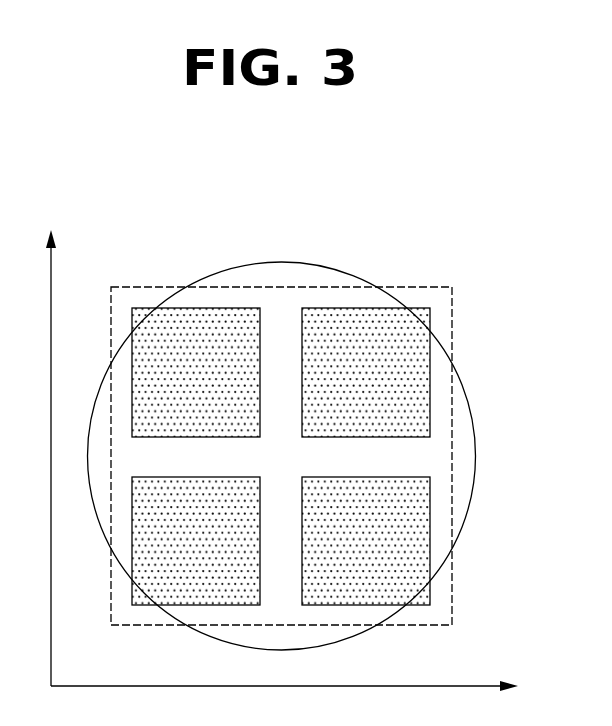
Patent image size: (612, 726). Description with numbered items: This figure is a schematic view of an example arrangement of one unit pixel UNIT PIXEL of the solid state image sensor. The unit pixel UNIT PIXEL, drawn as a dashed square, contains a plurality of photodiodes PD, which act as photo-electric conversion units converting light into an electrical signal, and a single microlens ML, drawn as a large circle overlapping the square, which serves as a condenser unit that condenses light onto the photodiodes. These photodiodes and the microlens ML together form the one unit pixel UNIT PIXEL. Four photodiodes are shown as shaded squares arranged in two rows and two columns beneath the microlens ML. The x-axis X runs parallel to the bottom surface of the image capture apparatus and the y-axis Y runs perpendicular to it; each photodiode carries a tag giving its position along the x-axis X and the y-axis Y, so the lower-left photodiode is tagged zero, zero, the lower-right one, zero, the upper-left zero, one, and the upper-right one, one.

The microlens ML is at (236, 267).
The unit pixel UNIT PIXEL is at (434, 287).
The x-axis X is at (302, 693).
The y-axis Y is at (50, 439).